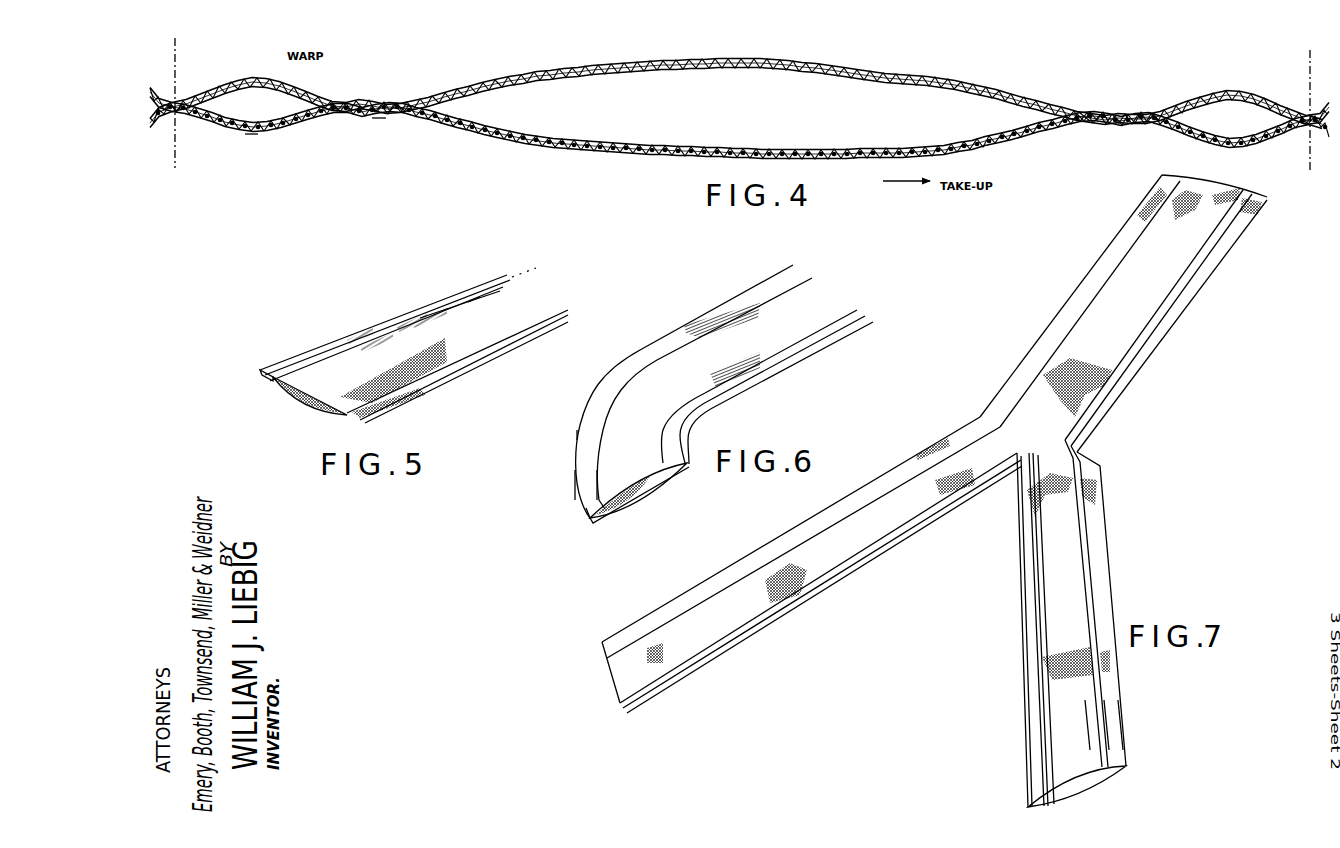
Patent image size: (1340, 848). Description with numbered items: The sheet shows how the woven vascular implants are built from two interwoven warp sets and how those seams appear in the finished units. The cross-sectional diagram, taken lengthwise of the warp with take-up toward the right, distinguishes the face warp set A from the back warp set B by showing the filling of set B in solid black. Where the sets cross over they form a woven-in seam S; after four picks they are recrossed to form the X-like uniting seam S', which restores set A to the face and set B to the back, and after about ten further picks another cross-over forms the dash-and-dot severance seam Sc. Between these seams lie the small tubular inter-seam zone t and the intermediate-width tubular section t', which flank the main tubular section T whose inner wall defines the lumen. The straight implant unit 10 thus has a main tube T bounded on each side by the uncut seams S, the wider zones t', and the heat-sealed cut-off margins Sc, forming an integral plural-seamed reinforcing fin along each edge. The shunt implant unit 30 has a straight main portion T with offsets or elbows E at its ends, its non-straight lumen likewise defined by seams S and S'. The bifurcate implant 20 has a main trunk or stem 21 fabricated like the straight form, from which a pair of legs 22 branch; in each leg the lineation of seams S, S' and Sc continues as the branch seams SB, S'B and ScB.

In FIG. 4, the face warp set A is at (172, 113).
In FIG. 4, the back warp set B is at (172, 96).
In FIG. 4, the main tubular section T is at (862, 66).
In FIG. 5, the main tubular section T is at (292, 399).
In FIG. 6, the main tubular section T is at (639, 440).
In FIG. 7, the main tubular section T is at (1155, 266).
In FIG. 4, the small tubular inter-seam zone t is at (850, 152).
In FIG. 5, the small tubular inter-seam zone t is at (369, 365).
In FIG. 6, the small tubular inter-seam zone t is at (667, 454).
In FIG. 7, the small tubular inter-seam zone t is at (1090, 304).
In FIG. 4, the intermediate-width tubular section t' is at (717, 113).
In FIG. 5, the intermediate-width tubular section t' is at (368, 362).
In FIG. 7, the intermediate-width tubular section t' is at (850, 456).
In FIG. 4, the woven-in seam S is at (741, 85).
In FIG. 5, the woven-in seam S is at (490, 308).
In FIG. 6, the woven-in seam S is at (615, 472).
In FIG. 7, the woven-in seam S is at (1094, 758).
In FIG. 4, the second seam S' is at (749, 87).
In FIG. 5, the second seam S' is at (460, 295).
In FIG. 6, the second seam S' is at (556, 473).
In FIG. 7, the second seam S' is at (1126, 746).
In FIG. 4, the severance line seam Sc is at (740, 103).
In FIG. 5, the severance line seam Sc is at (470, 295).
In FIG. 7, the severance line seam Sc is at (1126, 745).
In FIG. 5, the straight tubular implant unit 10 is at (378, 321).
In FIG. 6, the shunt implant unit 30 is at (722, 303).
In FIG. 6, the offset or elbow E is at (566, 433).
In FIG. 7, the bifurcate implant 20 is at (995, 393).
In FIG. 7, the main trunk or stem 21 is at (1194, 329).
In FIG. 7, the leg 22 is at (766, 639).
In FIG. 7, the branch cut-and-seal seam ScB is at (1021, 570).
In FIG. 7, the branch second seam S'B is at (1001, 629).
In FIG. 7, the branch seam SB is at (1039, 606).